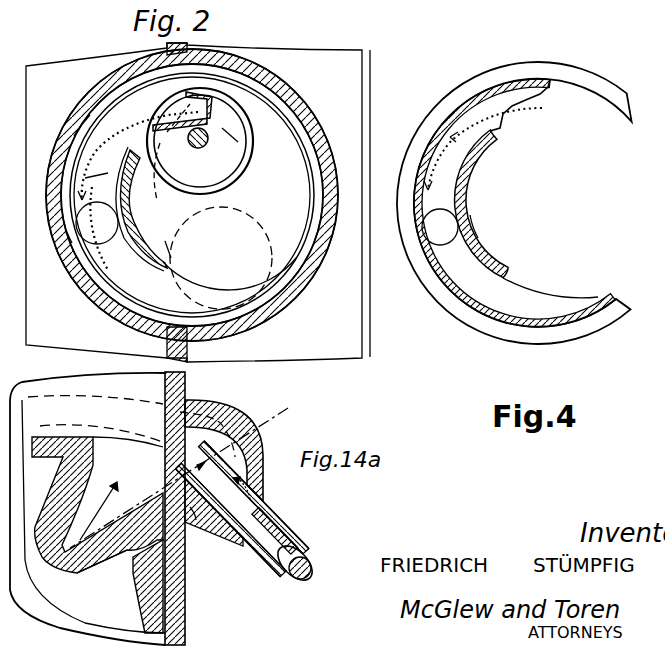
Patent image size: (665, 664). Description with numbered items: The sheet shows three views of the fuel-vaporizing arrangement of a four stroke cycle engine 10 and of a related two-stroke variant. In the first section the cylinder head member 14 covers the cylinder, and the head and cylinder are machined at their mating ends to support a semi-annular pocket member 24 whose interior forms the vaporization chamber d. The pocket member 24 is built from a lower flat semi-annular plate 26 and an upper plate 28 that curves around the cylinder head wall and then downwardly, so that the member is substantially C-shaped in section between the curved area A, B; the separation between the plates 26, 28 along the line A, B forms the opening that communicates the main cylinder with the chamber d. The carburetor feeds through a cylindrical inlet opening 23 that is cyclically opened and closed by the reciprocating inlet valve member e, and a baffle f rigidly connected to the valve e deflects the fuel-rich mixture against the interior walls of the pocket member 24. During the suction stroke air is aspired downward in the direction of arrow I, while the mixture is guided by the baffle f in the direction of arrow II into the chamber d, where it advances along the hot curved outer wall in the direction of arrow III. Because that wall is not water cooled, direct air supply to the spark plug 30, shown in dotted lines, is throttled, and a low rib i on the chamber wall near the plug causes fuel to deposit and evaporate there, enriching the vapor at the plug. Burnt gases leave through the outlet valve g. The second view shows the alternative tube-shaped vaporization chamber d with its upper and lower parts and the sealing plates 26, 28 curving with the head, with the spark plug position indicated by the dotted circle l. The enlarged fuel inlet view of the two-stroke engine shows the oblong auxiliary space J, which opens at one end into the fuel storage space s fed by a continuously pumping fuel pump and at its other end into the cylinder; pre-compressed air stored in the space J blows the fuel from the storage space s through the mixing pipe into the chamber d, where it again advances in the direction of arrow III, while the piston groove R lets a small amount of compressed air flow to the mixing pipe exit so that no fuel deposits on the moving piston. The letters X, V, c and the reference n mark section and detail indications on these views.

In FIG. 2, the four stroke cycle engine 10 is at (376, 78).
In FIG. 2, the cylinder head member 14 is at (306, 128).
In FIG. 2, the cylindrical inlet opening 23 is at (235, 176).
In FIG. 2, the semi-annular pocket member 24 is at (174, 267).
In FIG. 4, the semi-annular pocket member 24 is at (490, 247).
In FIG. 2, the lower flat semi-annular plate 26 is at (213, 289).
In FIG. 4, the lower flat semi-annular plate 26 is at (527, 293).
In FIG. 4, the upper plate 28 is at (463, 195).
In FIG. 2, the spark plug 30 is at (82, 258).
In FIG. 2, the vaporization chamber d is at (124, 110).
In FIG. 4, the vaporization chamber d is at (450, 178).
In FIG. 2, the housing bore n is at (74, 136).
In FIG. 2, the inlet valve member e is at (199, 149).
In FIG. 2, the baffle f is at (218, 118).
In FIG. 2, the outlet valve g is at (268, 235).
In FIG. 2, the rib i is at (72, 243).
In FIG. 2, the curved area end A is at (142, 160).
In FIG. 2, the curved area end B is at (162, 240).
In FIG. 2, the arrow I is at (265, 170).
In FIG. 2, the arrow II is at (176, 141).
In FIG. 2, the arrow III is at (132, 277).
In FIG. 4, the arrow III is at (463, 166).
In FIG. 14A, the arrow III is at (100, 503).
In FIG. 4, the dotted circle l is at (477, 229).
In FIG. 14A, the auxiliary space J is at (105, 407).
In FIG. 14A, the axis X is at (184, 470).
In FIG. 14A, the fuel storage space s is at (251, 488).
In FIG. 14A, the channel c is at (190, 507).
In FIG. 14A, the piston groove R is at (130, 563).
In FIG. 14A, the section line V is at (304, 574).